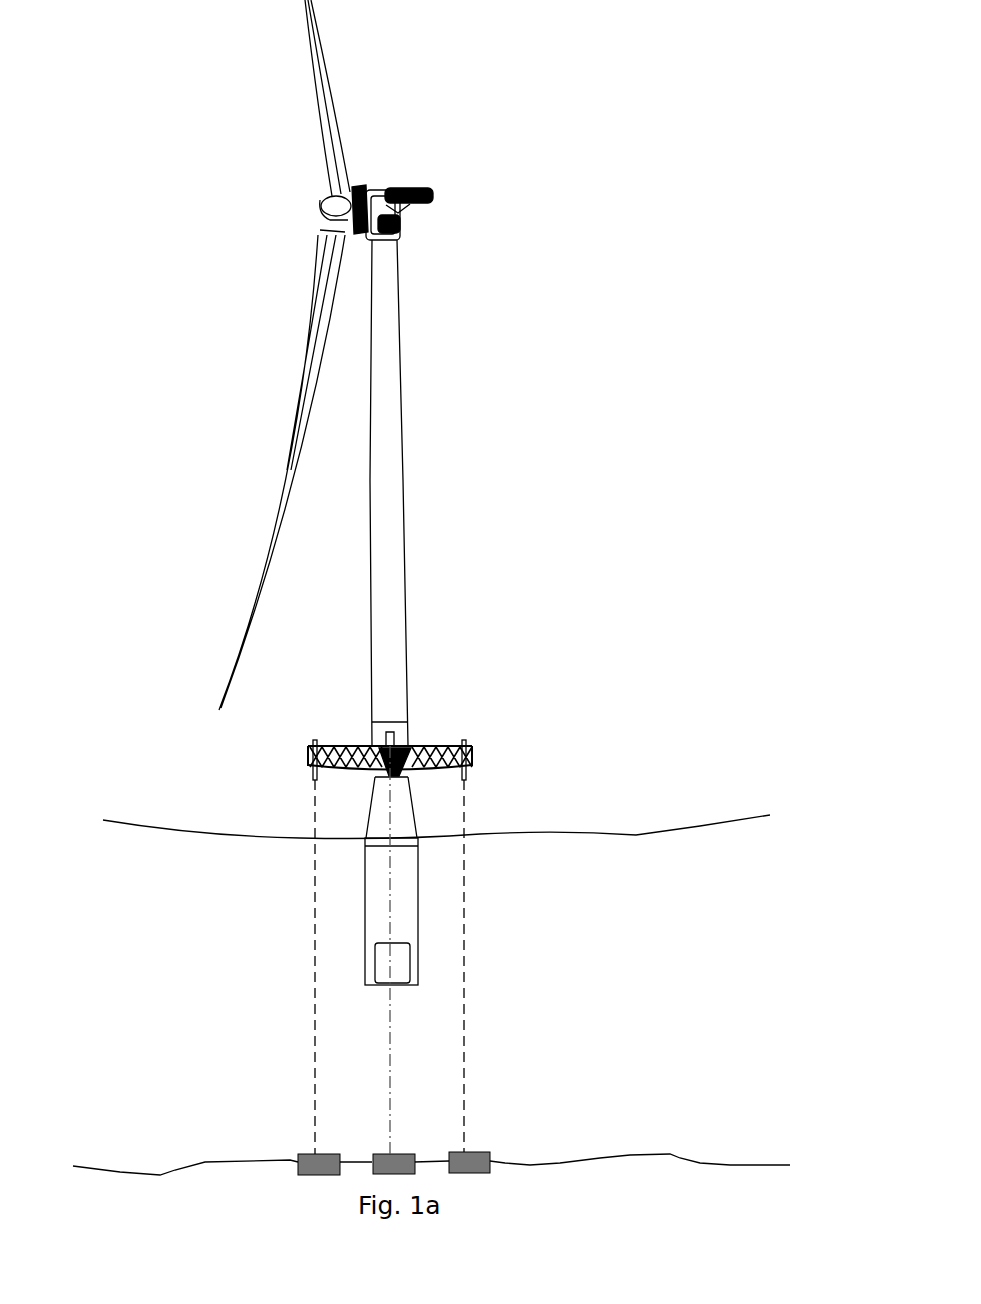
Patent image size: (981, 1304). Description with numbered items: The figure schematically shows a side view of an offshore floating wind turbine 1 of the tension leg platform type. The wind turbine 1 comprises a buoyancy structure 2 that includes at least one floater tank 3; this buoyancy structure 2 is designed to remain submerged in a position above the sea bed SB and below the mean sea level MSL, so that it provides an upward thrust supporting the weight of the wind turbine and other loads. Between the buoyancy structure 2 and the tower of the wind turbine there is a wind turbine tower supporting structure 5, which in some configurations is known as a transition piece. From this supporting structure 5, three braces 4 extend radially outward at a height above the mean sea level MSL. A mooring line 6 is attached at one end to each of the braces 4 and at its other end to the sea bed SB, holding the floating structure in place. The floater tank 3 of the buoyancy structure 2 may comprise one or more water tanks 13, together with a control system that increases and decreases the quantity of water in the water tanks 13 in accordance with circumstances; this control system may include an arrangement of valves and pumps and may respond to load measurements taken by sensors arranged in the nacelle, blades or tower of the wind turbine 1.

The wind turbine 1 is at (458, 378).
The buoyancy structure 2 is at (333, 892).
The floater tank 3 is at (407, 933).
The braces 4 is at (342, 748).
The wind turbine tower supporting structure 5 is at (372, 768).
The mooring line 6 is at (318, 932).
The water tanks 13 is at (388, 977).
The mean sea level MSL is at (636, 835).
The sea bed SB is at (628, 1156).